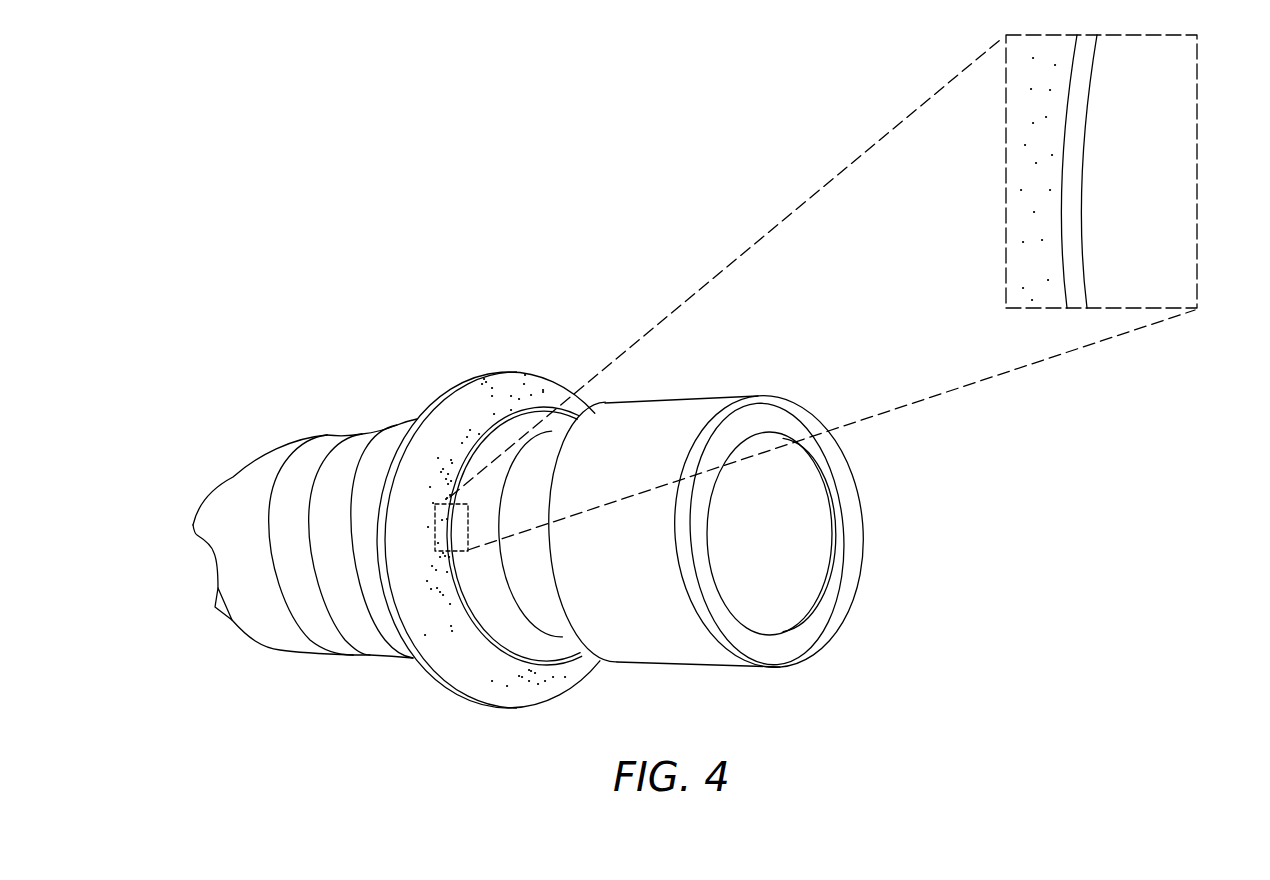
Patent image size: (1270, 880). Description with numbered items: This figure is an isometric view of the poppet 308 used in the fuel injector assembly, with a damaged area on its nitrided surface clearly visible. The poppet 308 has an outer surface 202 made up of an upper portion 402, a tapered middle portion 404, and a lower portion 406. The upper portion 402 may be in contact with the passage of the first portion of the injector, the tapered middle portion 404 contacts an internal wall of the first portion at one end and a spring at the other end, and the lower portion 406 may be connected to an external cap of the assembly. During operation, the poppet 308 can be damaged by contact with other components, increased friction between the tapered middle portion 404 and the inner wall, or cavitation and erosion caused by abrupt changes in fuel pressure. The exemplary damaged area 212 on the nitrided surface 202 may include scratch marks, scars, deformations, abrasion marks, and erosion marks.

The poppet 308 is at (280, 158).
The outer surface 202 is at (677, 420).
The damaged area 212 is at (1025, 100).
The upper portion 402 is at (663, 628).
The tapered middle portion 404 is at (423, 617).
The lower portion 406 is at (245, 508).